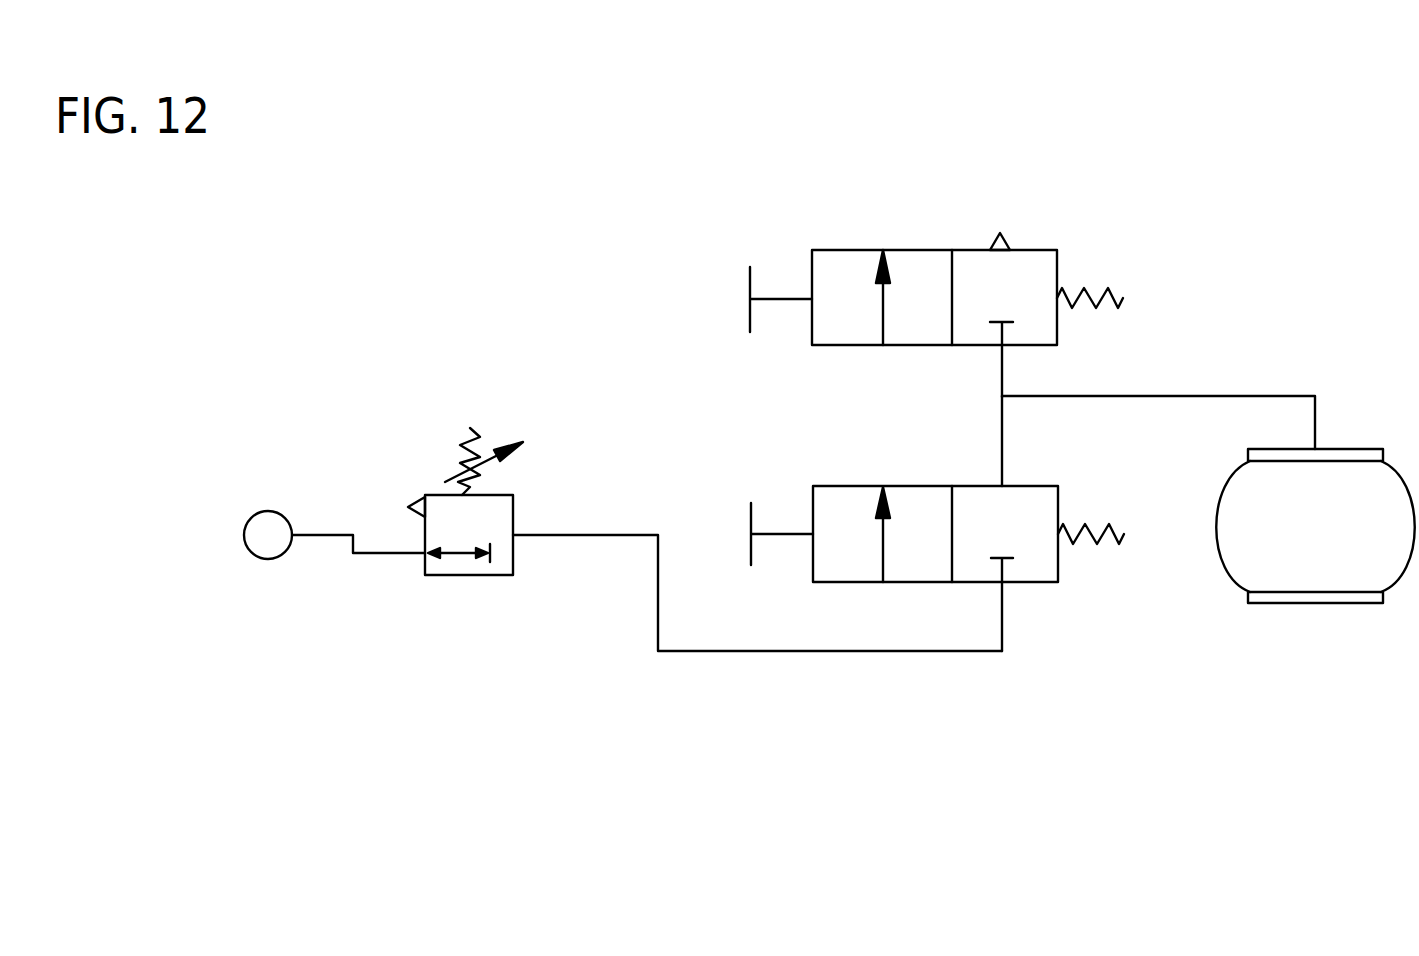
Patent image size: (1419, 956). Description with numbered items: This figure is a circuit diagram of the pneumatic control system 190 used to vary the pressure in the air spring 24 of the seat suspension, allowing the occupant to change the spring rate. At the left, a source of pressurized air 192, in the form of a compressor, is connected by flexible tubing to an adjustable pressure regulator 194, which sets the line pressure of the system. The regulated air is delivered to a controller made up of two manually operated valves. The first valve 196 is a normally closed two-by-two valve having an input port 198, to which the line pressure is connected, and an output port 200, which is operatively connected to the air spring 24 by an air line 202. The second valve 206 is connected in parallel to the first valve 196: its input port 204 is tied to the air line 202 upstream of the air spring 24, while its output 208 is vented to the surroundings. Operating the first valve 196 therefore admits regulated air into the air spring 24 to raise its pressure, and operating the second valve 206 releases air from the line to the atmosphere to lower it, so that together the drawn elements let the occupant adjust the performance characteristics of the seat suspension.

The control system 190 is at (276, 318).
The source of pressurized air 192 is at (270, 511).
The pressure regulator 194 is at (418, 568).
The first valve 196 is at (828, 485).
The input port 198 is at (1005, 583).
The output port 200 is at (998, 484).
The air line 202 is at (1245, 394).
The input port 204 is at (1000, 347).
The second valve 206 is at (832, 250).
The output 208 is at (1008, 243).
The air spring 24 is at (1222, 560).